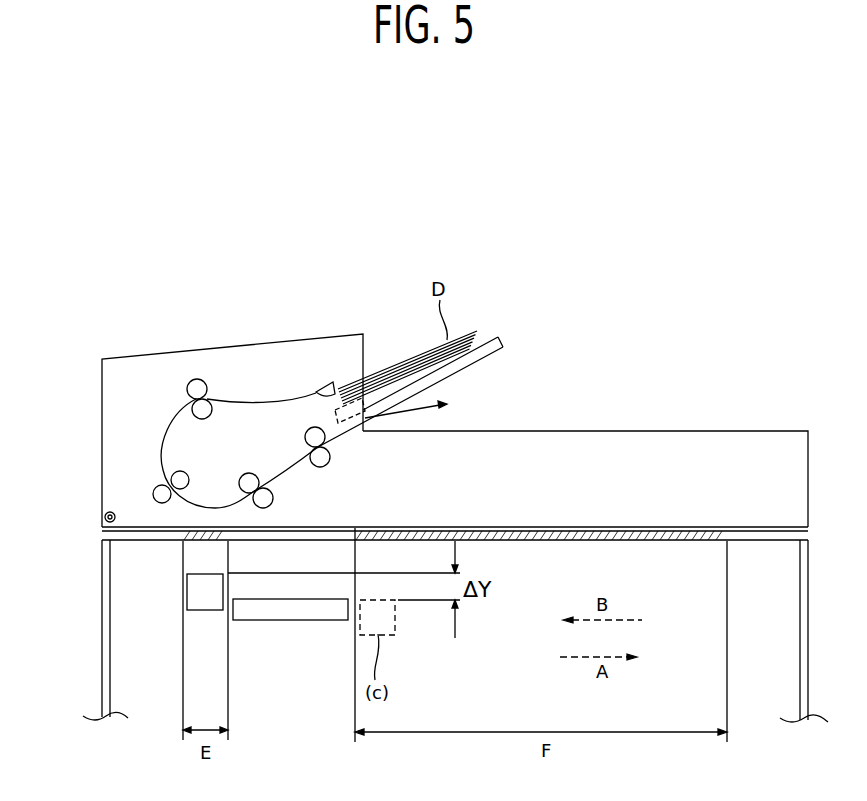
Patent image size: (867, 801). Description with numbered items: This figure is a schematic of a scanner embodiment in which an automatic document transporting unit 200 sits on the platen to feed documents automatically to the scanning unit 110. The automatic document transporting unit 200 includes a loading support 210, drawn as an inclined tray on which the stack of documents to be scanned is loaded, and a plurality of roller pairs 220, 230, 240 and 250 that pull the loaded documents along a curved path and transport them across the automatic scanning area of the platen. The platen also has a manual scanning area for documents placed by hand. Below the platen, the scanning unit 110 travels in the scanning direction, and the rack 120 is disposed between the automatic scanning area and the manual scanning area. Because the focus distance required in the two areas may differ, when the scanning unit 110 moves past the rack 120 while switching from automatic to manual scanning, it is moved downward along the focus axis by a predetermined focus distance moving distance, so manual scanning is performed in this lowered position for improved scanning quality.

The scanning unit 110 is at (196, 598).
The rack 120 is at (292, 611).
The automatic document transporting unit 200 is at (274, 326).
The loading support 210 is at (505, 345).
The roller pair 220 is at (194, 381).
The roller pair 230 is at (167, 487).
The roller pair 240 is at (274, 496).
The roller pair 250 is at (330, 458).